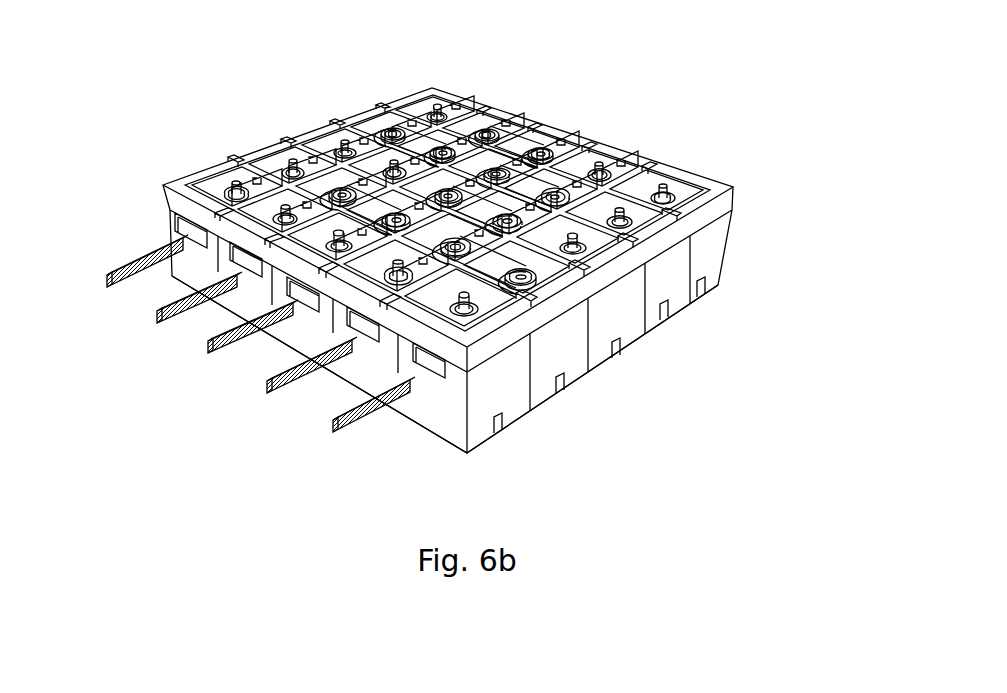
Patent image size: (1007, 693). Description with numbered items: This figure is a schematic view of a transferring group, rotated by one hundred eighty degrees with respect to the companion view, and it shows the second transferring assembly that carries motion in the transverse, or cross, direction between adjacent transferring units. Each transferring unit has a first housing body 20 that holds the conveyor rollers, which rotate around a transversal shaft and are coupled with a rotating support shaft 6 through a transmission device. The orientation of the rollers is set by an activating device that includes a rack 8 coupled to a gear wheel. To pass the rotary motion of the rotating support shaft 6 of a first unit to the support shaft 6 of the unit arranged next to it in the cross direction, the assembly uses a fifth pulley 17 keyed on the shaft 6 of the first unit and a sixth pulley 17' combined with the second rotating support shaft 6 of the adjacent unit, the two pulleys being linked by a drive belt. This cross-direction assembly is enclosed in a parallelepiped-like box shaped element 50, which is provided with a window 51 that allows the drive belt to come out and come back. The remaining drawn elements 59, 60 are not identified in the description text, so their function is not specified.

The rotating support shaft 6 is at (450, 95).
The rack 8 is at (109, 289).
The fifth pulley 17 is at (412, 299).
The sixth pulley 17' is at (512, 213).
The first housing body 20 is at (677, 302).
The parallelepiped-like box shaped element 50 is at (165, 200).
The window 51 is at (245, 150).
The bottom edge 59 is at (588, 150).
The bottom tray 60 is at (722, 233).